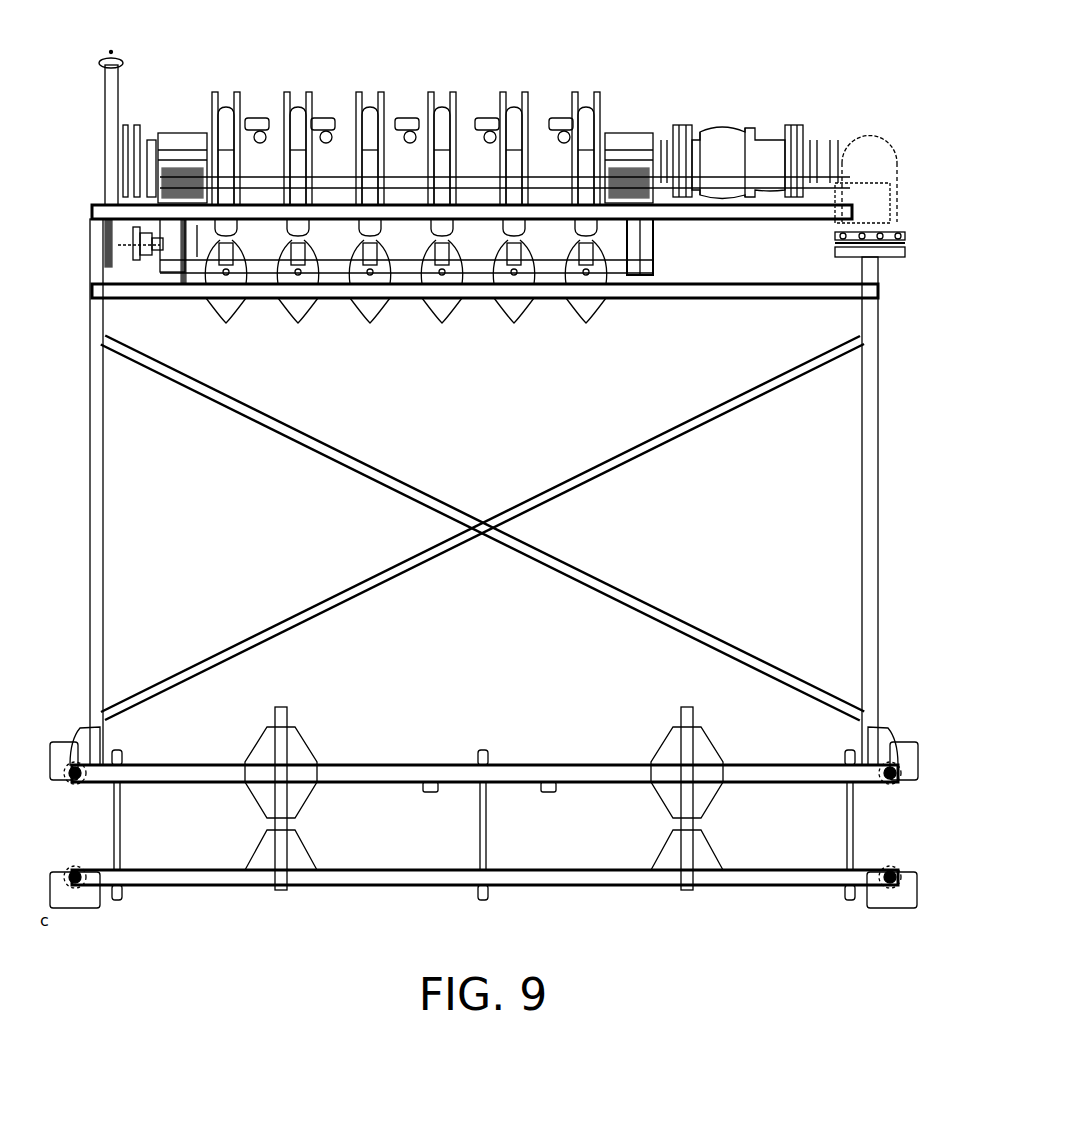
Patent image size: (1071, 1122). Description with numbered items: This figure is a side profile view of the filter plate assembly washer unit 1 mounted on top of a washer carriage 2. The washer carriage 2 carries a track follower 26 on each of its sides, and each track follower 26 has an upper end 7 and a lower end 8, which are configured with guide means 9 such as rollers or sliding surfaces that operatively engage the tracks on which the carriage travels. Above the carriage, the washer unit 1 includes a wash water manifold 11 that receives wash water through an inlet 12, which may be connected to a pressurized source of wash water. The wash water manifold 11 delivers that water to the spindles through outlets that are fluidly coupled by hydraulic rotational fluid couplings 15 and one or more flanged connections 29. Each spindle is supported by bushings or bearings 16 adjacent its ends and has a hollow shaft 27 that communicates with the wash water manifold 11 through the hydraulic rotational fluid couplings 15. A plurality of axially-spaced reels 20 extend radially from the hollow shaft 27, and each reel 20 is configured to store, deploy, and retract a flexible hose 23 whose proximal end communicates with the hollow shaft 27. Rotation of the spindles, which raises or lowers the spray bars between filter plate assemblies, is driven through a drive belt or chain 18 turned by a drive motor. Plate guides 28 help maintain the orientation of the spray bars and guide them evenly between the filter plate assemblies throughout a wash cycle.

The filter plate assembly washer unit 1 is at (499, 190).
The washer carriage 2 is at (895, 382).
The upper end 7 is at (362, 763).
The lower end 8 is at (762, 875).
The guide means 9 is at (70, 784).
The wash water manifold 11 is at (863, 140).
The inlet 12 is at (820, 146).
The hydraulic rotational fluid coupling 15 is at (723, 137).
The bushings or bearings 16 is at (179, 134).
The drive belt or chain 18 is at (103, 113).
The reel 20 is at (287, 94).
The flexible hose 23 is at (431, 122).
The track follower 26 is at (482, 800).
The hollow shaft 27 is at (340, 152).
The plate guide 28 is at (297, 320).
The flanged connection 29 is at (690, 125).